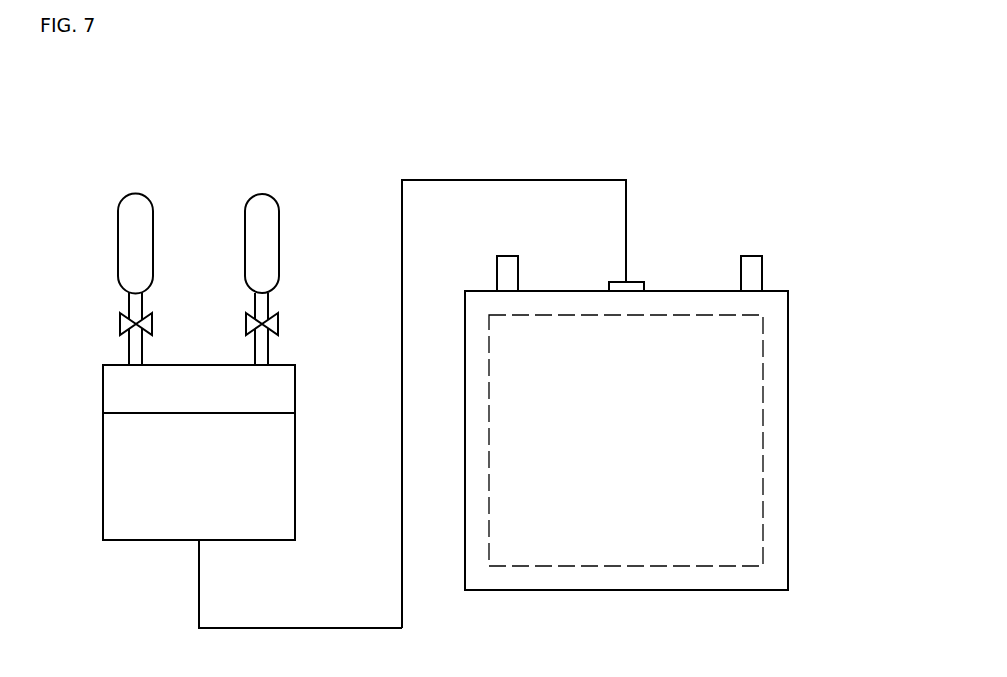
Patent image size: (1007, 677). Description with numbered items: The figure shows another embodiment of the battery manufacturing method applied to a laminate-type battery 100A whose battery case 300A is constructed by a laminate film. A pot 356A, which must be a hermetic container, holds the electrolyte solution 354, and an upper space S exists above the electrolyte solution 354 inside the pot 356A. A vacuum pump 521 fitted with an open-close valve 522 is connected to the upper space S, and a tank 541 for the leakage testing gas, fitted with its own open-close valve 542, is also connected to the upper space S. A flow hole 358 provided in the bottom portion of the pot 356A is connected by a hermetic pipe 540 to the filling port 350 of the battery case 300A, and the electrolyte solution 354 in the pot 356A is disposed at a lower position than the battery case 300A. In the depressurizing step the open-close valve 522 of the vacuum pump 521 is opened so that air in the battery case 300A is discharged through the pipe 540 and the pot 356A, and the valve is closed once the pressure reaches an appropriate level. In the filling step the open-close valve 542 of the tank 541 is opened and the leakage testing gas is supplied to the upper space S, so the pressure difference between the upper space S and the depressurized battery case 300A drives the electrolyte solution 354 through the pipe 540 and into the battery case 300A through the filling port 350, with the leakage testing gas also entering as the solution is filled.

The vacuum pump 521 is at (153, 240).
The open-close valve 522 is at (152, 323).
The tank 541 is at (279, 240).
The open-close valve 542 is at (278, 323).
The pot 356A is at (295, 393).
The electrolyte solution 354 is at (252, 413).
The upper space S is at (138, 385).
The flow hole 358 is at (199, 545).
The hermetic pipe 540 is at (546, 180).
The filling port 350 is at (641, 270).
The laminate-type battery 100A is at (678, 412).
The battery case 300A is at (788, 405).